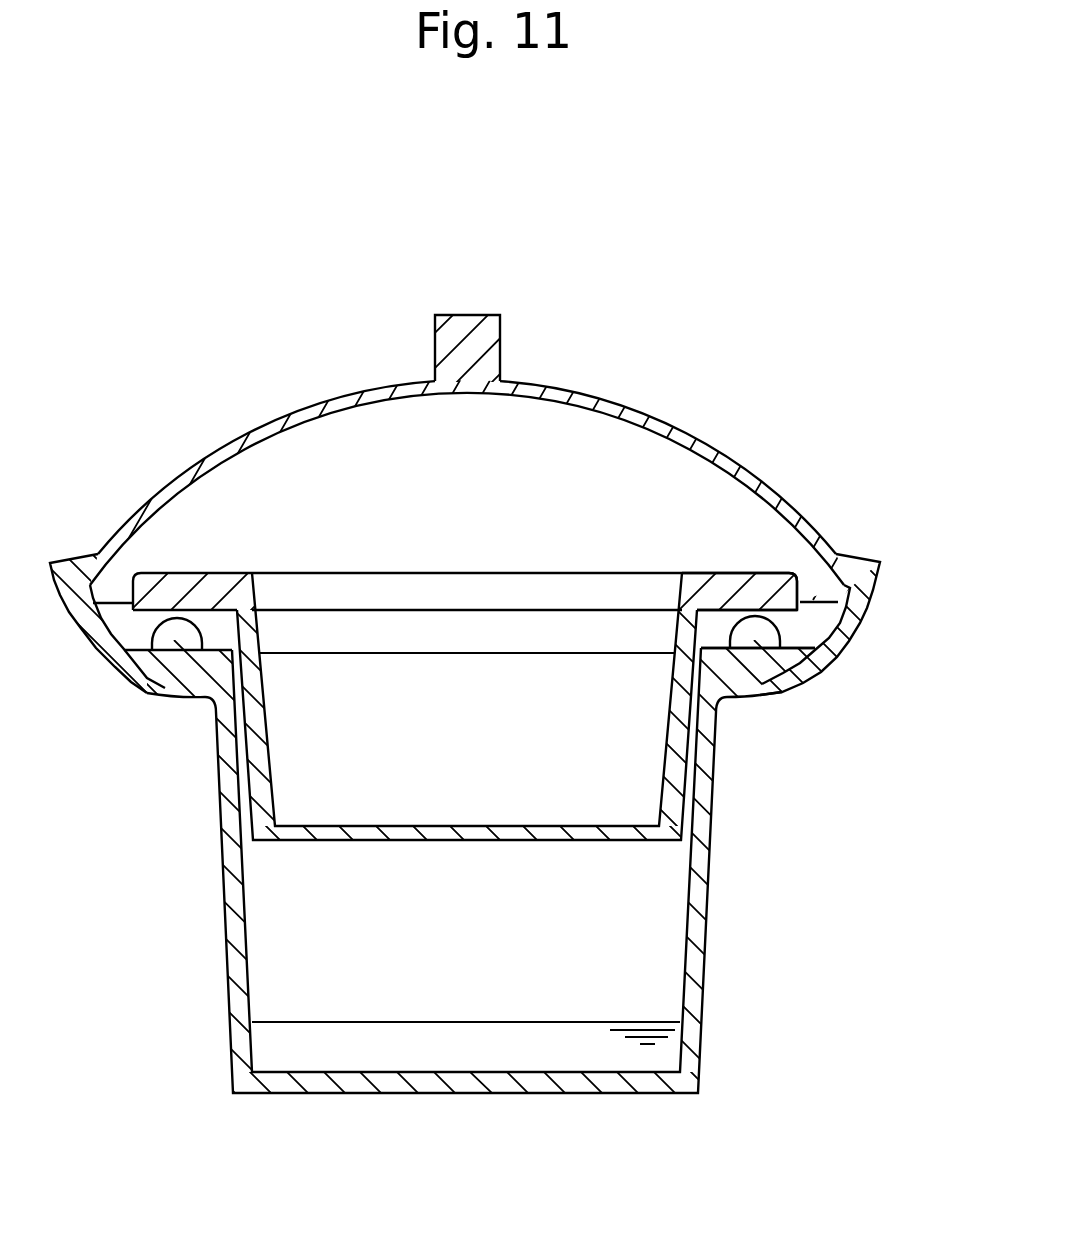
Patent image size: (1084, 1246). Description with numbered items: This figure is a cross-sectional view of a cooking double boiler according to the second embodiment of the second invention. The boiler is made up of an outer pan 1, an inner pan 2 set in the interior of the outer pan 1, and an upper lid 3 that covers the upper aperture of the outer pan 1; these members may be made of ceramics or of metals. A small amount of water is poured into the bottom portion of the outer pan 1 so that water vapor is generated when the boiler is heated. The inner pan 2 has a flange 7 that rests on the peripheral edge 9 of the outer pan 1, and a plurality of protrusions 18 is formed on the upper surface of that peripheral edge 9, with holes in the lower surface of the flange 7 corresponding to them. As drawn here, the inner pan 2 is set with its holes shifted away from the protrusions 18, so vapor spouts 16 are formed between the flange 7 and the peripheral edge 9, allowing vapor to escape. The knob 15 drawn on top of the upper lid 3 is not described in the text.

The outer pan 1 is at (542, 697).
The inner pan 2 is at (466, 581).
The upper lid 3 is at (515, 458).
The flange 7 is at (733, 588).
The peripheral edge 9 is at (817, 658).
The handle 15 is at (540, 465).
The vapor spout 16 is at (213, 632).
The protrusion 18 is at (752, 637).